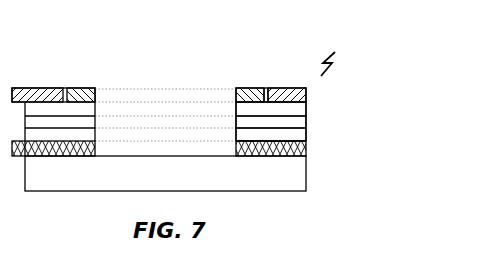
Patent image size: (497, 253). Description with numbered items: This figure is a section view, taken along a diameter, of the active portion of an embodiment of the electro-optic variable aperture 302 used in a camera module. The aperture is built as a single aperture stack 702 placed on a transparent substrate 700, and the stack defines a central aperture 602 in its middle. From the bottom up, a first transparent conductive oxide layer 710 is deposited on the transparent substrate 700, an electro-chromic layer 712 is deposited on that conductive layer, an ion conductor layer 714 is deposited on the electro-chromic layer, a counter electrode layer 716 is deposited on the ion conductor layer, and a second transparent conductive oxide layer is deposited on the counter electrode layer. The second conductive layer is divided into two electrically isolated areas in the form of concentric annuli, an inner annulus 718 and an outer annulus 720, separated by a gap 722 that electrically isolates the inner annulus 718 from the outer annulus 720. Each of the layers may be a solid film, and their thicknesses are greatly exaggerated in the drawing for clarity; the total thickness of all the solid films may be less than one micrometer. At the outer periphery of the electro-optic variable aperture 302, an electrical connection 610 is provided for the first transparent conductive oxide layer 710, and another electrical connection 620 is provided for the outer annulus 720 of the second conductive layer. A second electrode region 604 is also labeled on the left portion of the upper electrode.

The electro-optic variable aperture 302 is at (336, 54).
The central aperture 602 is at (96, 88).
The first portion of top electrode 604 is at (62, 88).
The electrical connection 610 is at (17, 158).
The electrical connection 620 is at (64, 70).
The transparent substrate 700 is at (306, 172).
The aperture stack 702 is at (234, 96).
The first transparent conductive oxide layer 710 is at (235, 144).
The electro-chromic layer 712 is at (235, 132).
The ion conductor layer 714 is at (235, 120).
The counter electrode layer 716 is at (235, 109).
The inner annulus 718 is at (252, 88).
The outer annulus 720 is at (272, 88).
The gap 722 is at (266, 88).